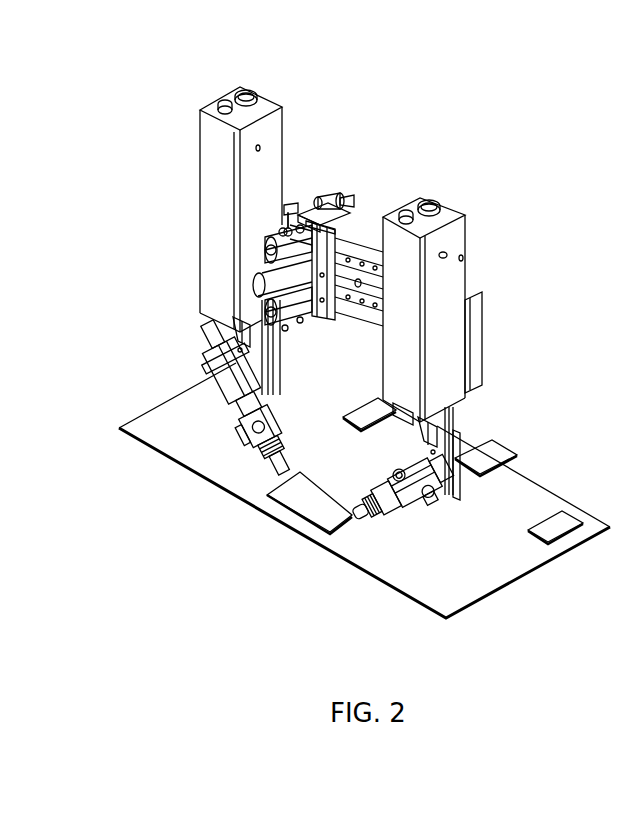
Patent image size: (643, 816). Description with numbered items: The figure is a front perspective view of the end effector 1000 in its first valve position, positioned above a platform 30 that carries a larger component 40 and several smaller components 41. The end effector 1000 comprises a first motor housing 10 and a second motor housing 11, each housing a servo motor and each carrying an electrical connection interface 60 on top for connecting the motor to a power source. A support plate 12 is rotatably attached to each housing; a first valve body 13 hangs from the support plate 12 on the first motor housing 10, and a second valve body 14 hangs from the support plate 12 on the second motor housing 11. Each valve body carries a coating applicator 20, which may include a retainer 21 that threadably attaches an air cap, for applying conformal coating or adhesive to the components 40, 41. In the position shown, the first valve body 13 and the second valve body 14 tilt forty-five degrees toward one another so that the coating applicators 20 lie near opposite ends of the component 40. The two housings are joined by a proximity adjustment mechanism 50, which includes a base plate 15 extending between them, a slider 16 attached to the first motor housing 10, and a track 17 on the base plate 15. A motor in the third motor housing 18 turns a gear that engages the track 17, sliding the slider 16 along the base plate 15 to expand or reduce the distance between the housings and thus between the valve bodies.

The end effector 1000 is at (508, 180).
The first motor housing 10 is at (215, 195).
The second motor housing 11 is at (455, 295).
The support plate 12 is at (245, 330).
The first valve body 13 is at (228, 390).
The second valve body 14 is at (455, 495).
The base plate 15 is at (362, 238).
The slider 16 is at (320, 318).
The track 17 is at (360, 298).
The third motor housing 18 is at (262, 283).
The coating applicator 20 is at (273, 470).
The retainer 21 is at (283, 452).
The platform 30 is at (172, 423).
The component 40 is at (323, 505).
The components 41 is at (372, 420).
The proximity adjustment mechanism 50 is at (446, 250).
The electrical connection interface 60 is at (246, 95).